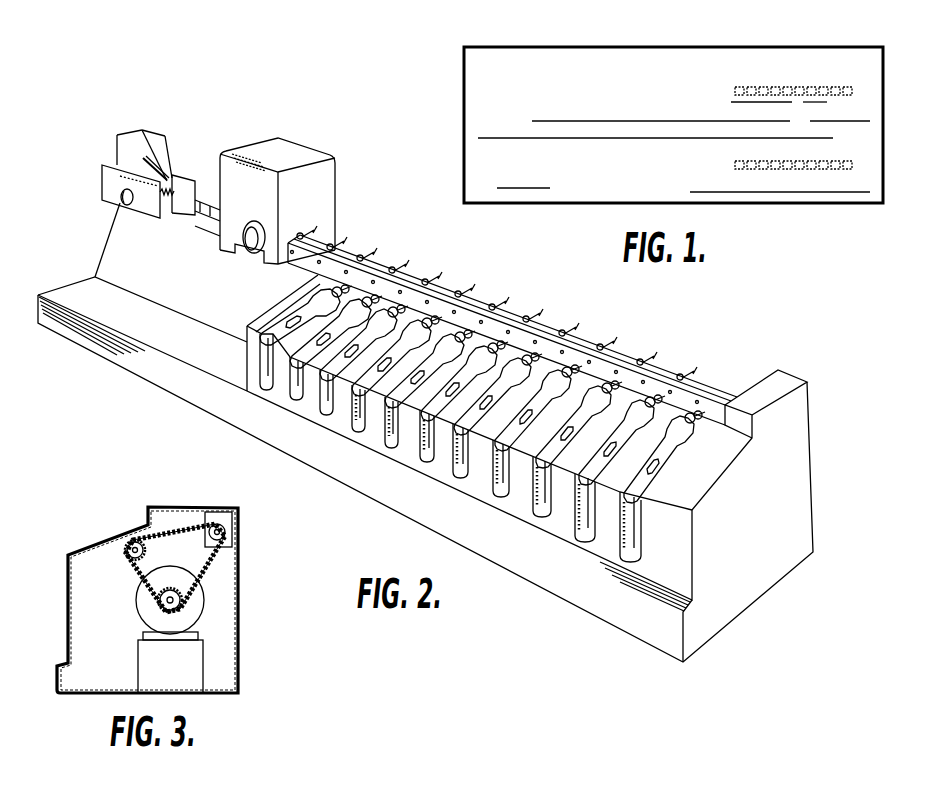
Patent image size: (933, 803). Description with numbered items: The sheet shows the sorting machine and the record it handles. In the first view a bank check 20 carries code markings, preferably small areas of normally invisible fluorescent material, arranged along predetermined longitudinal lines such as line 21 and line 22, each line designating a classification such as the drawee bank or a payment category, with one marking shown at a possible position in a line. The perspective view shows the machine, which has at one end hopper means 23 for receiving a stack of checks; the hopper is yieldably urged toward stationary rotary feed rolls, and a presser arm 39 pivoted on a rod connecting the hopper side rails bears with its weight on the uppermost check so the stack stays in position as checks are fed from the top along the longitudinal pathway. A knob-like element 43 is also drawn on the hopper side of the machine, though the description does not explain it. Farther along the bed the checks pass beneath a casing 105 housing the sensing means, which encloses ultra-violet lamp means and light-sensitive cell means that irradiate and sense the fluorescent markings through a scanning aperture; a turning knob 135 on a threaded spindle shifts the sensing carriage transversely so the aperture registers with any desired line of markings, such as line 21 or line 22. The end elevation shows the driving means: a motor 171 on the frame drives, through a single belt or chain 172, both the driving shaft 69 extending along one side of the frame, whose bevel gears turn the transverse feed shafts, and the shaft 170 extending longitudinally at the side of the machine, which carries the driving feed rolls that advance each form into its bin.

In FIG. 1, the check 20 is at (663, 48).
In FIG. 1, the line of markings 21 is at (858, 92).
In FIG. 1, the line of markings 22 is at (858, 167).
In FIG. 2, the hopper means 23 is at (108, 128).
In FIG. 2, the presser arm 39 is at (157, 167).
In FIG. 2, the knob 43 is at (130, 204).
In FIG. 2, the casing 105 is at (348, 192).
In FIG. 2, the turning knob 135 is at (247, 231).
In FIG. 3, the driving shaft 69 is at (221, 532).
In FIG. 3, the shaft 170 is at (132, 551).
In FIG. 3, the motor 171 is at (143, 605).
In FIG. 3, the belt or chain 172 is at (211, 565).